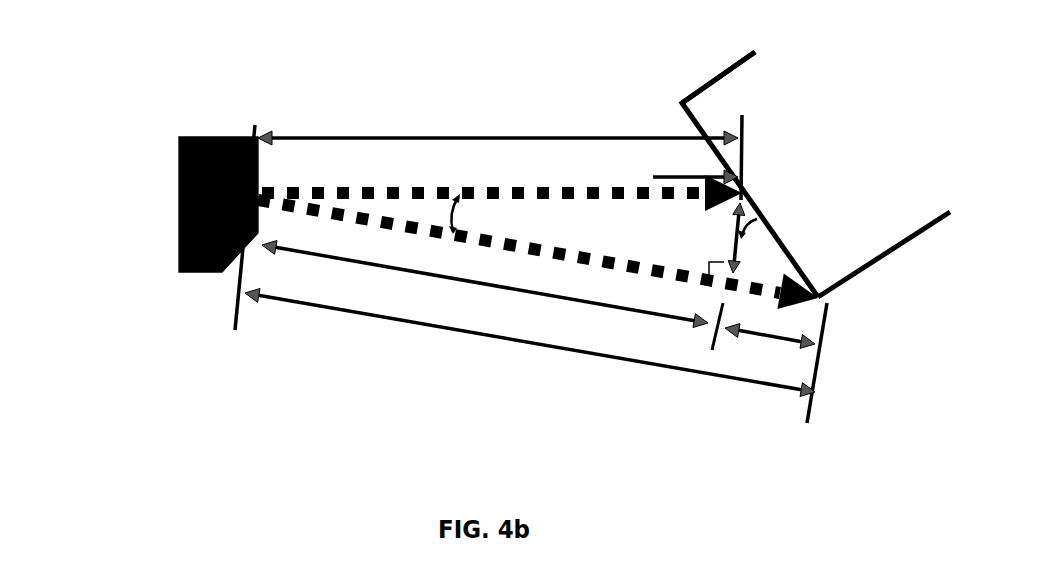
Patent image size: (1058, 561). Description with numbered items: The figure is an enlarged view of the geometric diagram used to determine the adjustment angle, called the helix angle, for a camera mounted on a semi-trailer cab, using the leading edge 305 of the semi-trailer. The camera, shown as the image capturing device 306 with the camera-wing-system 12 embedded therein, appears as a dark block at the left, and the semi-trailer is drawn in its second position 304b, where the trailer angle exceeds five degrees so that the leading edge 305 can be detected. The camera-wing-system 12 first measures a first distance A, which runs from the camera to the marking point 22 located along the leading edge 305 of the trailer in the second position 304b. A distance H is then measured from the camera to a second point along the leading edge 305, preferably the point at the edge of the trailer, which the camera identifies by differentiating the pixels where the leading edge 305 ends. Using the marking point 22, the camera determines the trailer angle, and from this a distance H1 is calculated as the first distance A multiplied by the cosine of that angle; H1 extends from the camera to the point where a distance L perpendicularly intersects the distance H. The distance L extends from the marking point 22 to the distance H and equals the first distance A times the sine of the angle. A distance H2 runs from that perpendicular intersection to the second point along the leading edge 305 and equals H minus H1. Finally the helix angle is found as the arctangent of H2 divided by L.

The camera-wing-system 12 is at (178, 243).
The image capturing device 306 is at (151, 222).
The marking point 22 is at (747, 183).
The leading edge 305 is at (680, 117).
The second position 304b is at (893, 243).
The first distance A is at (370, 133).
The distance L is at (723, 225).
The distance H1 is at (392, 265).
The distance H2 is at (763, 340).
The distance H is at (690, 377).